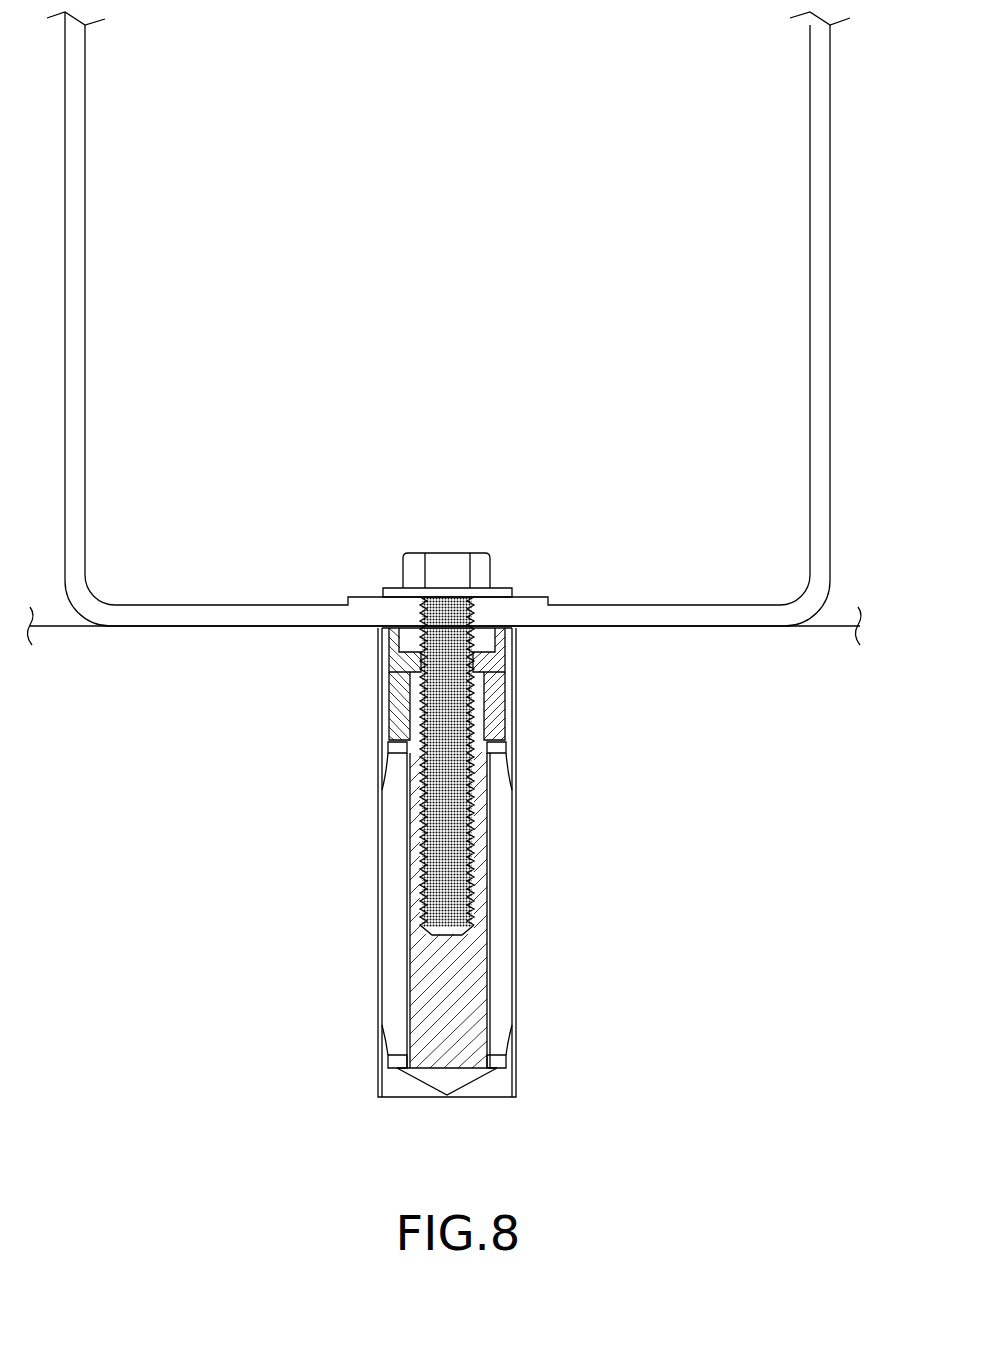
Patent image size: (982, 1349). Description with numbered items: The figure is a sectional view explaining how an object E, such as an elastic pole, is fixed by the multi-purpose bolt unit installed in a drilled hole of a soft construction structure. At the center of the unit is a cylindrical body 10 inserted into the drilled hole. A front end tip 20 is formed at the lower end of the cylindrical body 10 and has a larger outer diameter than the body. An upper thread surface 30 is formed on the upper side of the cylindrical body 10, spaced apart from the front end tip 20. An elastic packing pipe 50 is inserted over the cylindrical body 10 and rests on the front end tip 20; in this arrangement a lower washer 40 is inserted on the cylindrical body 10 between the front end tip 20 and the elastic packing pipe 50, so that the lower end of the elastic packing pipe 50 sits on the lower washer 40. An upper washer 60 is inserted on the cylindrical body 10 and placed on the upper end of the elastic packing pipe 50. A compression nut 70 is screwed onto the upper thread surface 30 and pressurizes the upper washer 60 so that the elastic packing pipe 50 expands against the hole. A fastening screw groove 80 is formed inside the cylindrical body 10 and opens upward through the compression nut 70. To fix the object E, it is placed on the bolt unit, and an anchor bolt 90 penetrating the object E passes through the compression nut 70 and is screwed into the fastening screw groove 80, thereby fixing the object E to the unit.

The cylindrical body 10 is at (458, 997).
The front end tip 20 is at (470, 1082).
The upper thread surface 30 is at (390, 710).
The lower washer 40 is at (507, 1062).
The elastic packing pipe 50 is at (390, 888).
The upper washer 60 is at (506, 750).
The compression nut 70 is at (505, 675).
The fastening screw groove 80 is at (490, 832).
The anchor bolt 90 is at (456, 560).
The object E is at (824, 240).